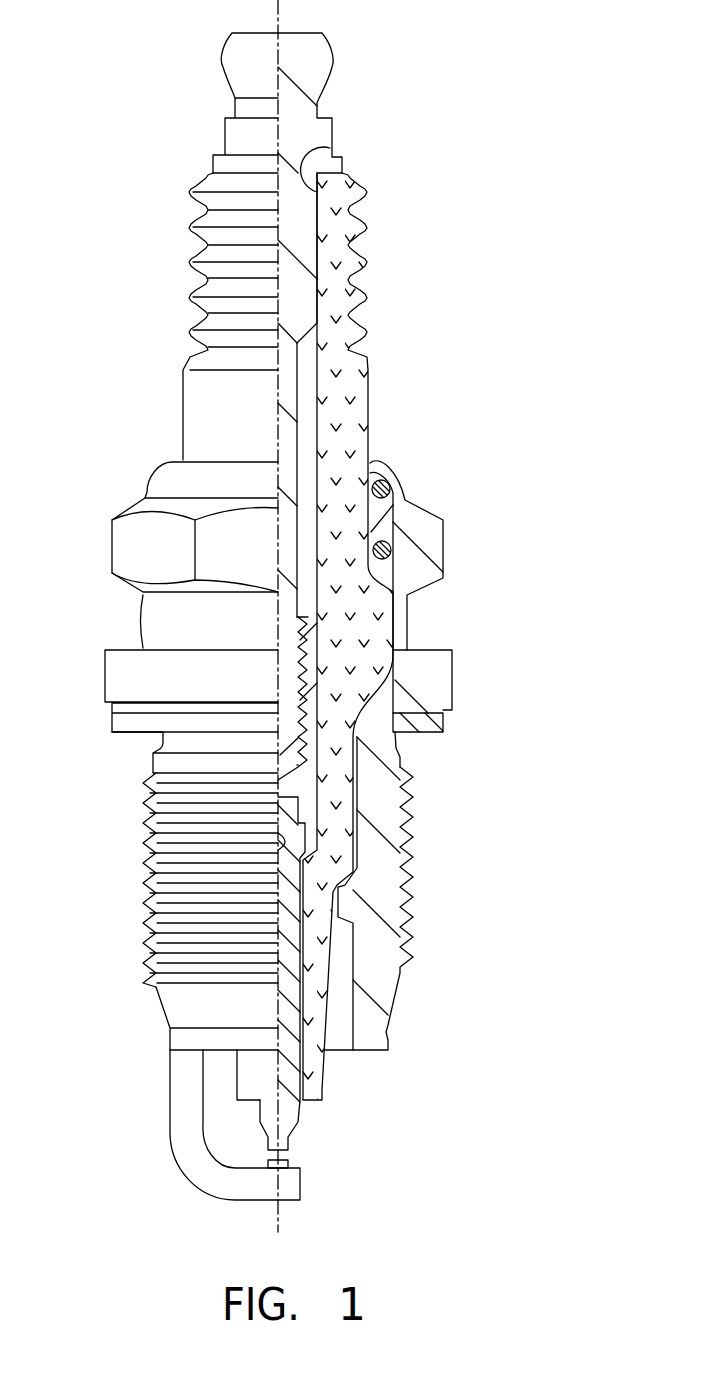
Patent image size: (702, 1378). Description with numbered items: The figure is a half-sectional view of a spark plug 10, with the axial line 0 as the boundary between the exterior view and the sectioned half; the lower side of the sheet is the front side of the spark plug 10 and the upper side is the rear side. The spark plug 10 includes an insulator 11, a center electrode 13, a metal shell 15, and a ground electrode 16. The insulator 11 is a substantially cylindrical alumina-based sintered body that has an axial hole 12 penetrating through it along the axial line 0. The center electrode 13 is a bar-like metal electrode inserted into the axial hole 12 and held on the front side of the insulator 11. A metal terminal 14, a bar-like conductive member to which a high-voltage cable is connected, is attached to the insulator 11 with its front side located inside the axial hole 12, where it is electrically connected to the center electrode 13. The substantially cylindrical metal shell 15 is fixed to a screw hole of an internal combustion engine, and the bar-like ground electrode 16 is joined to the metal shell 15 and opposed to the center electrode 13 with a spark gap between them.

The axial line 0 is at (281, 14).
The spark plug 10 is at (308, 616).
The insulator 11 is at (352, 407).
The axial hole 12 is at (331, 148).
The center electrode 13 is at (291, 1118).
The metal terminal 14 is at (247, 88).
The metal shell 15 is at (133, 552).
The ground electrode 16 is at (203, 1158).